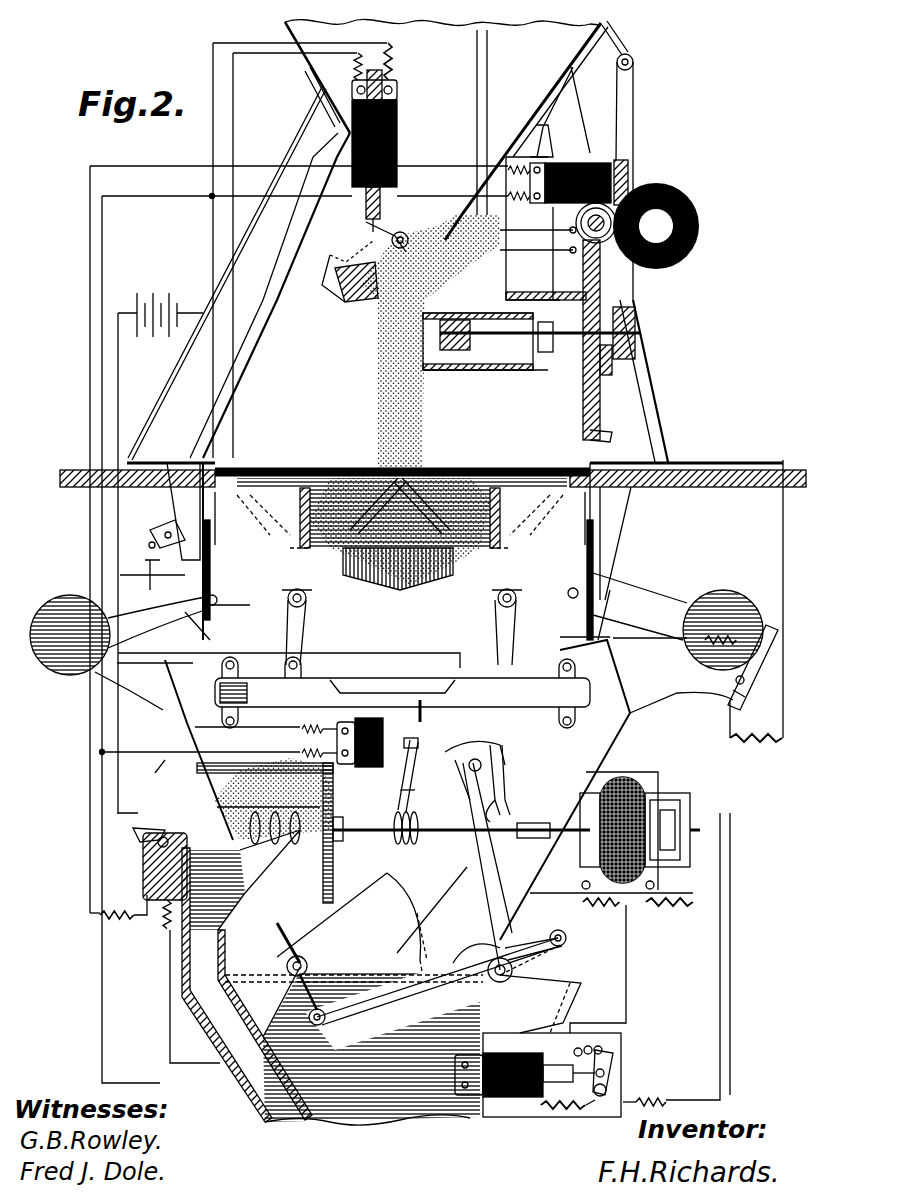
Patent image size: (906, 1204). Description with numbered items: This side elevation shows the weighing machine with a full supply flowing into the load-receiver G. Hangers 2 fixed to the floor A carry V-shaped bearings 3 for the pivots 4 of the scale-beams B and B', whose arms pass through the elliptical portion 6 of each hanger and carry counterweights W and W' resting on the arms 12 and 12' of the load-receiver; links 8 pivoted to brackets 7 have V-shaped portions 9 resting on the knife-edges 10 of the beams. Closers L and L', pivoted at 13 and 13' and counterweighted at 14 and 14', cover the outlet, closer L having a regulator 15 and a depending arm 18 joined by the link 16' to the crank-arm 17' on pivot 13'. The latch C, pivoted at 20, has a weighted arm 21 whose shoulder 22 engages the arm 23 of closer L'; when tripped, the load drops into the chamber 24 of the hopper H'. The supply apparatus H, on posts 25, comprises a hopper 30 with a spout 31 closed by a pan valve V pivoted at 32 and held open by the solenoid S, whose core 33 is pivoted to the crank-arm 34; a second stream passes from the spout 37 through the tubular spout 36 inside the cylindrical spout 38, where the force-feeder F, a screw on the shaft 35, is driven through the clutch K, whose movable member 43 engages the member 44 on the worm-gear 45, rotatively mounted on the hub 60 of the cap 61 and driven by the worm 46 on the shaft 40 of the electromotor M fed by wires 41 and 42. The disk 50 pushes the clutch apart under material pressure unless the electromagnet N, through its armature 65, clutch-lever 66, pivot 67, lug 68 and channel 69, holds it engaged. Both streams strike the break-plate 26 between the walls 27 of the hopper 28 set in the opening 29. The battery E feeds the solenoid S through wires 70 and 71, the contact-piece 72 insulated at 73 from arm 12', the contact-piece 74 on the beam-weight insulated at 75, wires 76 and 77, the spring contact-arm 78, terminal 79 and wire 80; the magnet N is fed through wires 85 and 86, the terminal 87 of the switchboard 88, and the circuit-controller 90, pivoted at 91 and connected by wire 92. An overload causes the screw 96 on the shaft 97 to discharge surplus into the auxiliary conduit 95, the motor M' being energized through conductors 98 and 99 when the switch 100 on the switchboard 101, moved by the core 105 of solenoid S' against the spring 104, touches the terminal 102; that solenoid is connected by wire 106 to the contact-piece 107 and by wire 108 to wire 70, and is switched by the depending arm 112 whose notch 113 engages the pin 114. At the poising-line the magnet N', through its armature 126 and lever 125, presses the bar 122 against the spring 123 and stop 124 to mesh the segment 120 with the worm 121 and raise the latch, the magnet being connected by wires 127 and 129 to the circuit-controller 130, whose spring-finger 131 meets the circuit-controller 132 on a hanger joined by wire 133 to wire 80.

The hanger 2 is at (185, 490).
The V-shaped bearing 3 is at (570, 606).
The pivot 4 is at (222, 597).
The elliptical portion 6 is at (185, 620).
The bracket 7 is at (347, 678).
The link 8 is at (290, 618).
The V-shaped portion 9 is at (302, 590).
The knife-edge 10 is at (306, 599).
The laterally-extending arm 12 is at (102, 697).
The laterally-extending arm 12' is at (681, 711).
The pivot 13 is at (274, 951).
The closer-pivot 13' is at (526, 970).
The counterweight 14 is at (354, 988).
The counterweight 14' is at (556, 958).
The regulator 15 is at (410, 1003).
The link 16' is at (378, 966).
The crank-arm 17' is at (533, 943).
The depending arm 18 is at (312, 995).
The pivot 20 is at (403, 752).
The weighted arm 21 is at (470, 745).
The shoulder 22 is at (456, 758).
The arm 23 is at (478, 827).
The chamber 24 is at (372, 1100).
The post 25 is at (268, 331).
The break-plate 26 is at (430, 470).
The wall 27 is at (478, 478).
The hopper 28 is at (565, 478).
The opening 29 is at (232, 500).
The hopper 30 is at (337, 74).
The spout 31 is at (350, 292).
The pivot 32 is at (406, 237).
The core 33 is at (393, 78).
The crank-arm 34 is at (392, 226).
The shaft 35 is at (485, 366).
The tubular spout 36 is at (450, 312).
The spout 37 is at (508, 291).
The cylindrical spout 38 is at (505, 375).
The shaft 40 is at (620, 212).
The wire 41 is at (522, 231).
The wire 42 is at (525, 251).
The movable clutch member 43 is at (640, 325).
The clutch member 44 is at (612, 362).
The worm-gear 45 is at (606, 418).
The worm 46 is at (662, 194).
The disk 50 is at (552, 358).
The hub 60 is at (578, 367).
The cap 61 is at (610, 277).
The armature 65 is at (628, 165).
The clutch-lever 66 is at (632, 112).
The pivot 67 is at (634, 60).
The lug 68 is at (610, 47).
The channel 69 is at (650, 362).
The wire 70 is at (213, 140).
The wire 71 is at (241, 125).
The contact-piece 72 is at (745, 684).
The insulation 73 is at (730, 700).
The contact-piece 74 is at (770, 663).
The insulation 75 is at (770, 632).
The wire 76 is at (653, 641).
The wire 77 is at (450, 706).
The spring contact-arm 78 is at (497, 795).
The contact-piece 79 is at (500, 807).
The wire 80 is at (118, 400).
The wire 85 is at (290, 200).
The wire 86 is at (437, 167).
The contact-piece 87 is at (90, 894).
The switchboard 88 is at (150, 885).
The circuit-controller 90 is at (150, 862).
The pivot 91 is at (170, 840).
The wire 92 is at (117, 790).
The auxiliary hopper 95 is at (200, 955).
The screw 96 is at (333, 860).
The shaft 97 is at (506, 840).
The conductor 98 is at (628, 997).
The conductor 99 is at (722, 868).
The switch 100 is at (605, 1083).
The switchboard 101 is at (520, 1105).
The terminal 102 is at (579, 1047).
The spring 104 is at (562, 1112).
The core 105 is at (553, 1062).
The wire 106 is at (170, 1038).
The contact-piece 107 is at (165, 905).
The wire 108 is at (160, 1085).
The depending arm 112 is at (155, 773).
The notch 113 is at (163, 828).
The pin 114 is at (133, 837).
The worm-gear segment 120 is at (392, 814).
The worm 121 is at (405, 840).
The reciprocatory bar 122 is at (420, 712).
The coiled spring 123 is at (415, 792).
The stop 124 is at (418, 746).
The actuator 125 is at (320, 727).
The armature 126 is at (380, 690).
The wire 127 is at (262, 752).
The wire 129 is at (262, 712).
The circuit-controller 130 is at (120, 577).
The spring-finger 131 is at (144, 562).
The circuit-controller 132 is at (149, 543).
The wire 133 is at (140, 530).
The floor A is at (703, 487).
The scale-beam B is at (187, 602).
The scale-beam B' is at (640, 606).
The closer-holding latch C is at (376, 796).
The battery E is at (160, 299).
The force-feeder F is at (478, 344).
The load-receiver G is at (605, 731).
The supply apparatus H is at (446, 129).
The discharge hopper H' is at (252, 984).
The clutch K is at (570, 336).
The closer L is at (352, 936).
The closer L' is at (432, 913).
The electromotor M is at (709, 233).
The electromotor M' is at (640, 827).
The electromagnet N is at (559, 163).
The magnet N' is at (358, 752).
The solenoid S is at (385, 144).
The solenoid S' is at (499, 1097).
The valve V is at (356, 252).
The counterweight W is at (66, 643).
The counterweight W' is at (723, 617).